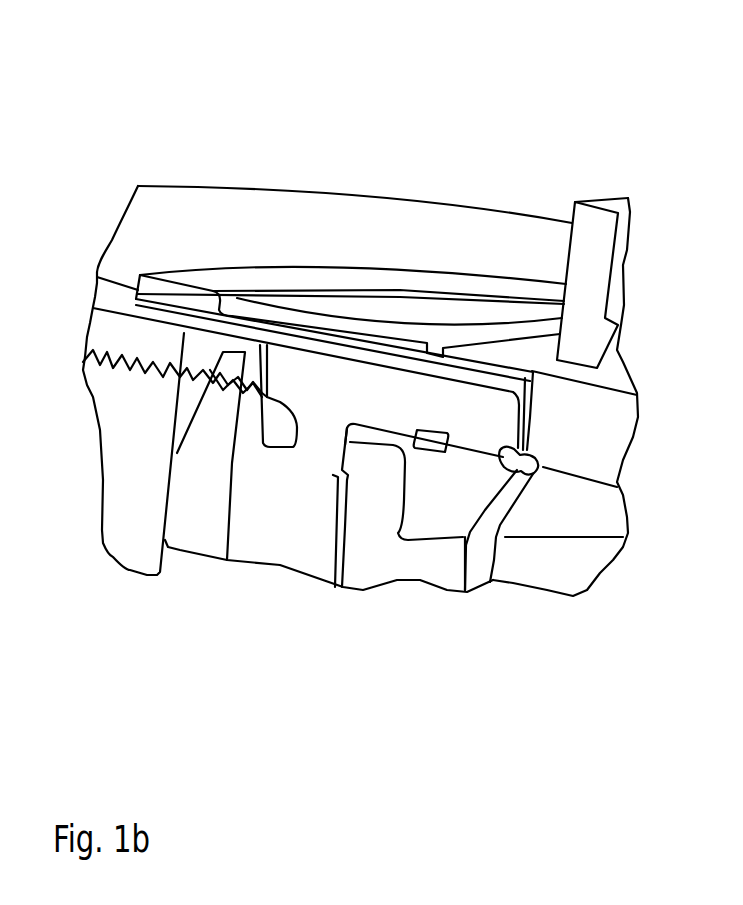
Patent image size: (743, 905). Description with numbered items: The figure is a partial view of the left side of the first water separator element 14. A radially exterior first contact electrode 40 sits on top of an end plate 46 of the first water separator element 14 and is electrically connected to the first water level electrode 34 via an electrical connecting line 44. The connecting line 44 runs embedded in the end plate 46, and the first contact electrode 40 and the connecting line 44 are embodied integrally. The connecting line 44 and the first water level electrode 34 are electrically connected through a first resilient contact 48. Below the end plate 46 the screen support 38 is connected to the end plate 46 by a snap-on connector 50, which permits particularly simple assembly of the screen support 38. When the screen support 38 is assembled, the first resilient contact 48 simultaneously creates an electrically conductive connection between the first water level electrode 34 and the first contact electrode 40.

The first water separator element 14 is at (172, 119).
The end plate 46 is at (112, 289).
The first contact electrode 40 is at (216, 279).
The electrical connecting line 44 is at (330, 350).
The screen support 38 is at (378, 598).
The snap-on connector 50 is at (335, 489).
The first water level electrode 34 is at (482, 558).
The first resilient contact 48 is at (522, 482).